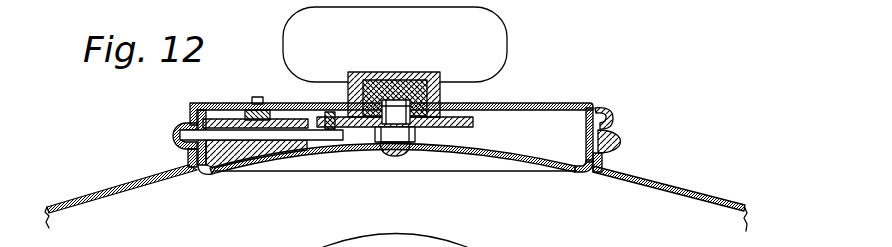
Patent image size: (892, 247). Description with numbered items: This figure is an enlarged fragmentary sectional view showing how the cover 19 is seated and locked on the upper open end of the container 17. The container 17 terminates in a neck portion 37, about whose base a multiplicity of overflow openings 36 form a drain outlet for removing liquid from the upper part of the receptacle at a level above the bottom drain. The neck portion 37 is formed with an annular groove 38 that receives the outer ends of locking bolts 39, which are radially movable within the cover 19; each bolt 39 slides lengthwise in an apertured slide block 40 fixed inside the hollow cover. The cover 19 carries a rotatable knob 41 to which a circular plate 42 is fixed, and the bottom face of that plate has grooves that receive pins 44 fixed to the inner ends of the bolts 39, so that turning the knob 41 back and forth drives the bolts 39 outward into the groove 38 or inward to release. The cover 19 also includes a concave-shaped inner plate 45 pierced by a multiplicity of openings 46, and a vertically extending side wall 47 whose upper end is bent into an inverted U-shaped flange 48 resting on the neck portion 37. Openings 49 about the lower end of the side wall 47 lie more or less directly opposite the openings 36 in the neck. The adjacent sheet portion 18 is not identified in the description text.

The container 17 is at (80, 207).
The panel 18 is at (703, 196).
The cover 19 is at (553, 102).
The overflow openings 36 is at (186, 163).
The neck portion 37 is at (176, 152).
The groove 38 is at (618, 133).
The locking bolts 39 is at (325, 135).
The slide block 40 is at (243, 152).
The rotatable knob 41 is at (497, 50).
The circular plate 42 is at (457, 128).
The pins 44 is at (331, 118).
The inner plate 45 is at (417, 146).
The openings 46 is at (503, 158).
The side wall 47 is at (586, 135).
The inverted U-shaped flange 48 is at (608, 112).
The openings 49 is at (578, 172).